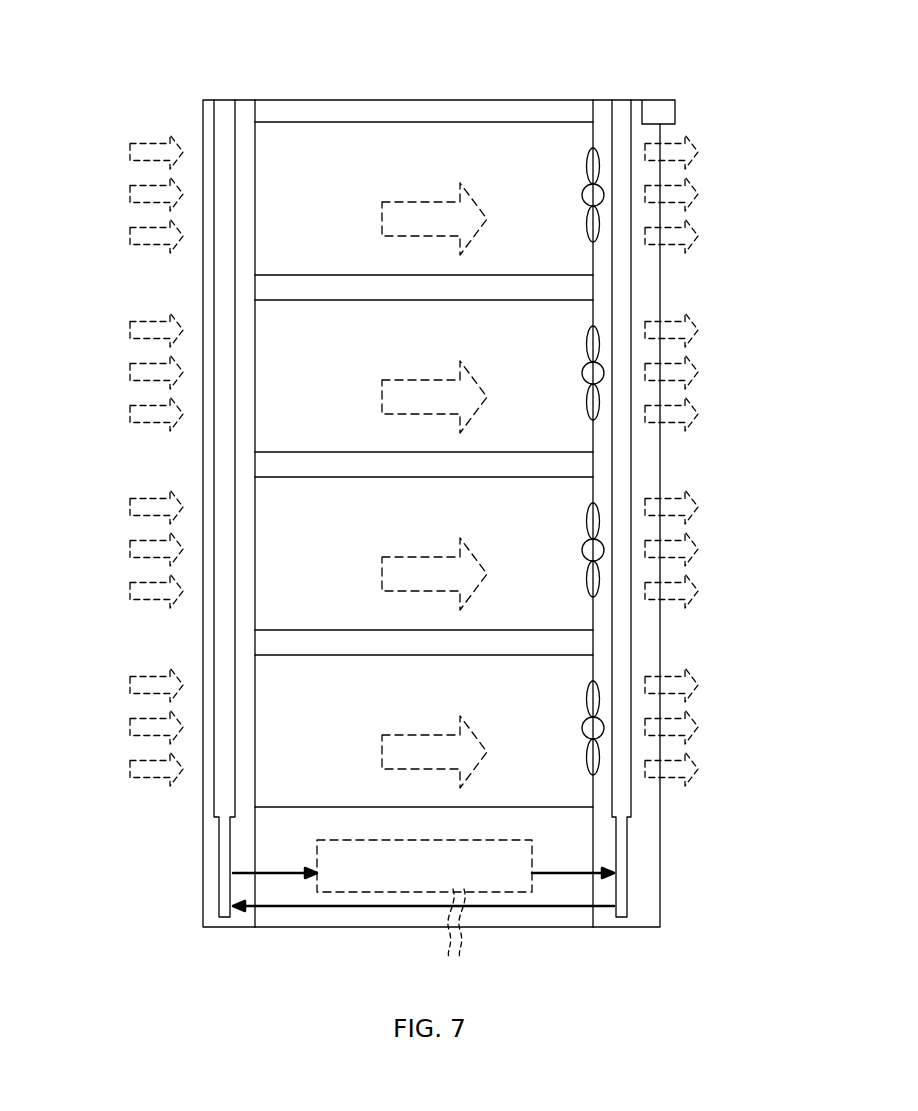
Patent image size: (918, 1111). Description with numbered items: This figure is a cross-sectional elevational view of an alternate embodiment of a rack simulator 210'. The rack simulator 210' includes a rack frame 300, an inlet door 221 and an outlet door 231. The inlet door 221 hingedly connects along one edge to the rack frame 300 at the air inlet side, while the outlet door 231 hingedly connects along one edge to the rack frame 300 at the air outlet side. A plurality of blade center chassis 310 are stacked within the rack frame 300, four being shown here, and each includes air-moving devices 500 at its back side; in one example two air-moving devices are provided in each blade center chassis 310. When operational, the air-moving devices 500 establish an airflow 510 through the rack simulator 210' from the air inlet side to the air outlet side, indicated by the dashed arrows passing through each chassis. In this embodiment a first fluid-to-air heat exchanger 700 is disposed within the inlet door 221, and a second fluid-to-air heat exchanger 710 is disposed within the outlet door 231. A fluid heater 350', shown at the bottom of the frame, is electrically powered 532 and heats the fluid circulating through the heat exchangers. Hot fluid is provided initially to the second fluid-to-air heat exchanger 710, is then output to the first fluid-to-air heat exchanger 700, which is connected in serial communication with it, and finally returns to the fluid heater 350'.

The rack simulator 210' is at (439, 466).
The inlet door 221 is at (247, 100).
The outlet door 231 is at (618, 100).
The rack frame 300 is at (525, 100).
The blade center chassis 310 is at (443, 172).
The fluid heater 350' is at (423, 911).
The air-moving device 500 is at (583, 200).
The airflow 510 is at (382, 220).
The electrical power 532 is at (457, 935).
The first fluid-to-air heat exchanger 700 is at (226, 639).
The second fluid-to-air heat exchanger 710 is at (625, 643).